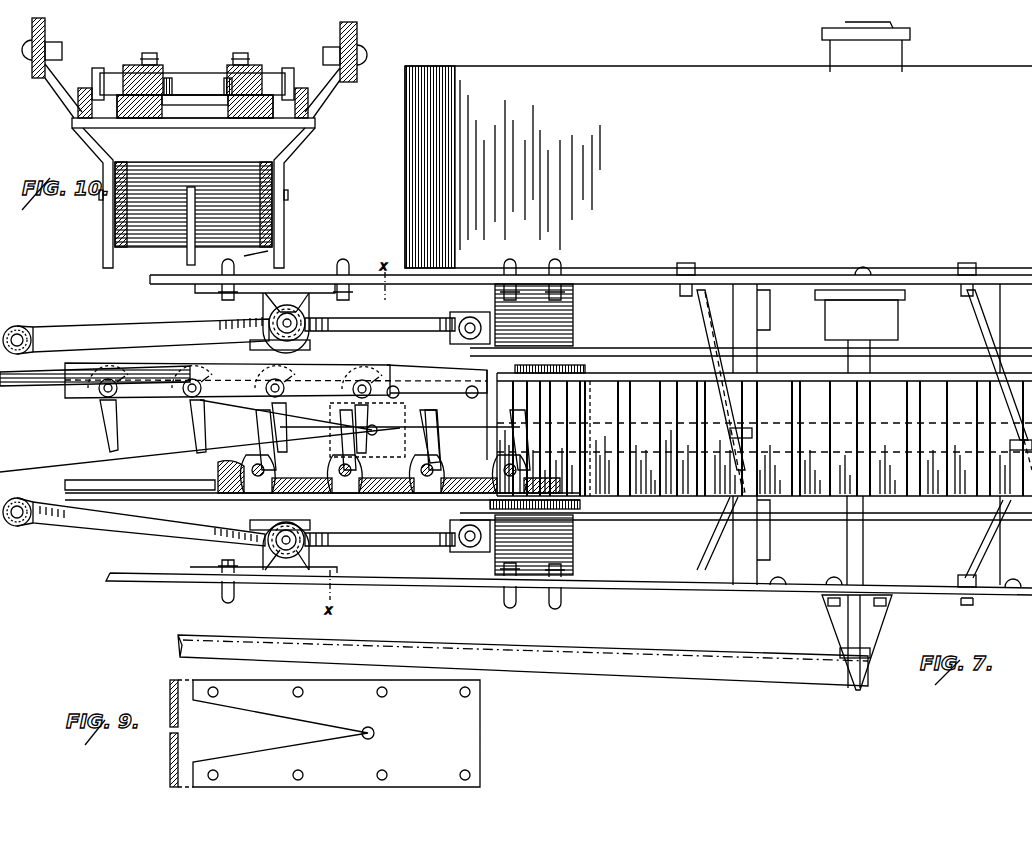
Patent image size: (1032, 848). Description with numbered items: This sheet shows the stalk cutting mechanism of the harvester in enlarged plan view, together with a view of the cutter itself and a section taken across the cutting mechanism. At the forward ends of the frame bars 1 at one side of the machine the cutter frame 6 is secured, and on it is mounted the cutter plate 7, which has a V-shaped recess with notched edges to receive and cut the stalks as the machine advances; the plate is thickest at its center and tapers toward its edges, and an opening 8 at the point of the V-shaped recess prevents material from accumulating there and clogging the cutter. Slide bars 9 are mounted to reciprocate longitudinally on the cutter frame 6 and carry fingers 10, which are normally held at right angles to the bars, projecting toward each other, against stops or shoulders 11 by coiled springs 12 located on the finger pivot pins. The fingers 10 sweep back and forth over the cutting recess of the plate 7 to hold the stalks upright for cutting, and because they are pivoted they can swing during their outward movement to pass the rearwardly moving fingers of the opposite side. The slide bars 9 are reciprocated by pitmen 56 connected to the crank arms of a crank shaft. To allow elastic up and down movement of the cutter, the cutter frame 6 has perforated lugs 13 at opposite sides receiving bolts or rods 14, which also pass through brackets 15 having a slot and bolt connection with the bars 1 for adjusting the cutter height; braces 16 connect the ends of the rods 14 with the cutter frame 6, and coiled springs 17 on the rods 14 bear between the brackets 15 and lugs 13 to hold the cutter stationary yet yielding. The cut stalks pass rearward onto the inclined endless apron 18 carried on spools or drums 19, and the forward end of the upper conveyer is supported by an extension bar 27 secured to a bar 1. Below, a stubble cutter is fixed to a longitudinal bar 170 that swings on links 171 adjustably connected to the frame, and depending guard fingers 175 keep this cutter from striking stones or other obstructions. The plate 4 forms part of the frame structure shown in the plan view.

In FIG. 10, the bars 1 is at (40, 66).
In FIG. 7, the bars 1 is at (630, 283).
In FIG. 7, the plate 4 is at (718, 145).
In FIG. 10, the cutter frame 6 is at (160, 118).
In FIG. 7, the cutter frame 6 is at (40, 386).
In FIG. 10, the cutter plate 7 is at (207, 108).
In FIG. 9, the cutter plate 7 is at (325, 733).
In FIG. 7, the cutter plate 7 is at (258, 452).
In FIG. 7, the opening 8 is at (376, 428).
In FIG. 10, the slide bars 9 is at (163, 70).
In FIG. 7, the slide bars 9 is at (165, 398).
In FIG. 10, the fingers 10 is at (195, 76).
In FIG. 7, the fingers 10 is at (307, 435).
In FIG. 7, the stops or shoulders 11 is at (278, 480).
In FIG. 10, the coiled springs 12 is at (157, 56).
In FIG. 7, the coiled springs 12 is at (120, 388).
In FIG. 7, the perforated lugs 13 is at (262, 334).
In FIG. 7, the bolts or rods 14 is at (292, 310).
In FIG. 7, the brackets 15 is at (268, 302).
In FIG. 10, the braces 16 is at (84, 90).
In FIG. 7, the braces 16 is at (246, 428).
In FIG. 7, the coiled springs 17 is at (282, 306).
In FIG. 7, the endless apron 18 is at (764, 434).
In FIG. 10, the spools or drums 19 is at (222, 166).
In FIG. 7, the spools or drums 19 is at (580, 505).
In FIG. 7, the extension bar 27 is at (523, 658).
In FIG. 7, the pitmen 56 is at (947, 356).
In FIG. 7, the longitudinal bar 170 is at (808, 420).
In FIG. 7, the links 171 is at (722, 333).
In FIG. 10, the guard fingers 175 is at (113, 256).